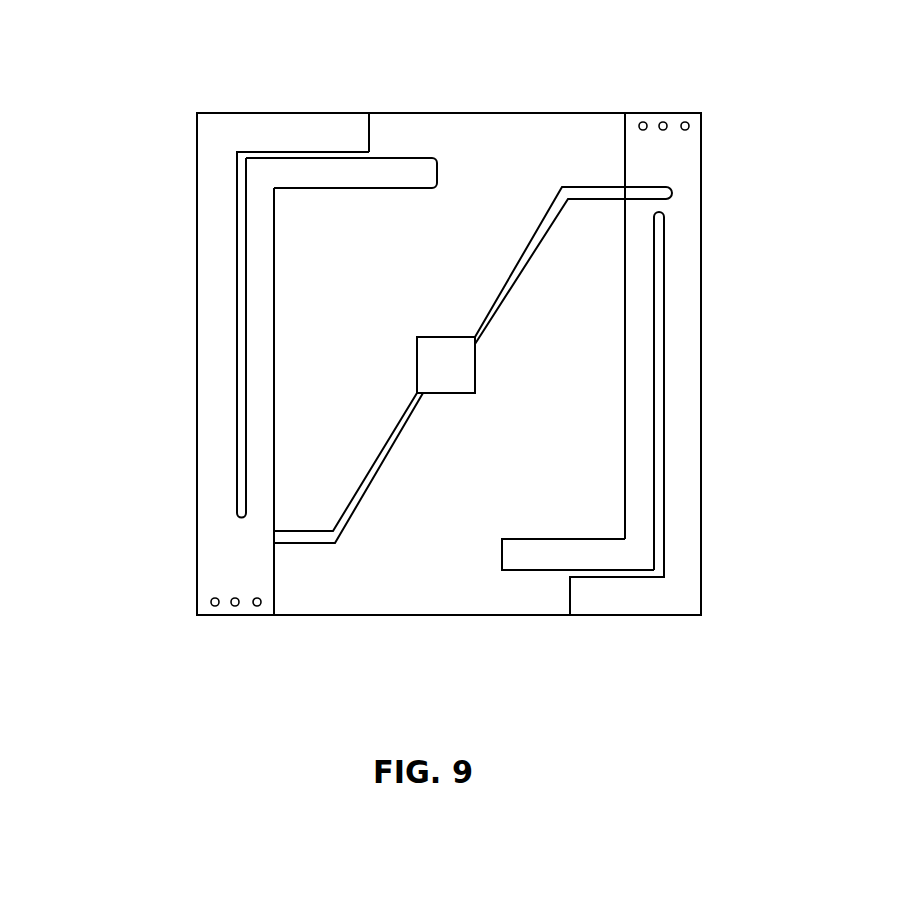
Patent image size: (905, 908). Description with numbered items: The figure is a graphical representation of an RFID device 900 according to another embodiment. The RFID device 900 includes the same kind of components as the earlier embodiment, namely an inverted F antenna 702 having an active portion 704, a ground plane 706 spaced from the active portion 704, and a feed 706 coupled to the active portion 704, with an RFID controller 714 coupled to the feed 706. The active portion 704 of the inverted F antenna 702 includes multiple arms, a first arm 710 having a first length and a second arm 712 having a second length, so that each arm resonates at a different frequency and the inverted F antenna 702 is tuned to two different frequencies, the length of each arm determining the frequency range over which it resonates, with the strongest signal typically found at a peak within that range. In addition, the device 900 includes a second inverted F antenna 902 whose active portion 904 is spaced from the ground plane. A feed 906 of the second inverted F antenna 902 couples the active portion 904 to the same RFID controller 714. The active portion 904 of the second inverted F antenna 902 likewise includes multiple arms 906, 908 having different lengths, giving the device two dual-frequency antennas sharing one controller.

The RFID device 900 is at (97, 78).
The inverted F antenna 702 is at (729, 250).
The active portion 704 is at (770, 125).
The ground plane 706 is at (600, 263).
The first arm 710 is at (770, 531).
The second arm 712 is at (548, 535).
The RFID controller 714 is at (547, 370).
The second inverted F antenna 902 is at (197, 267).
The active portion of second inverted F antenna 904 is at (213, 581).
The feed 906 is at (243, 128).
The arm 908 is at (410, 163).